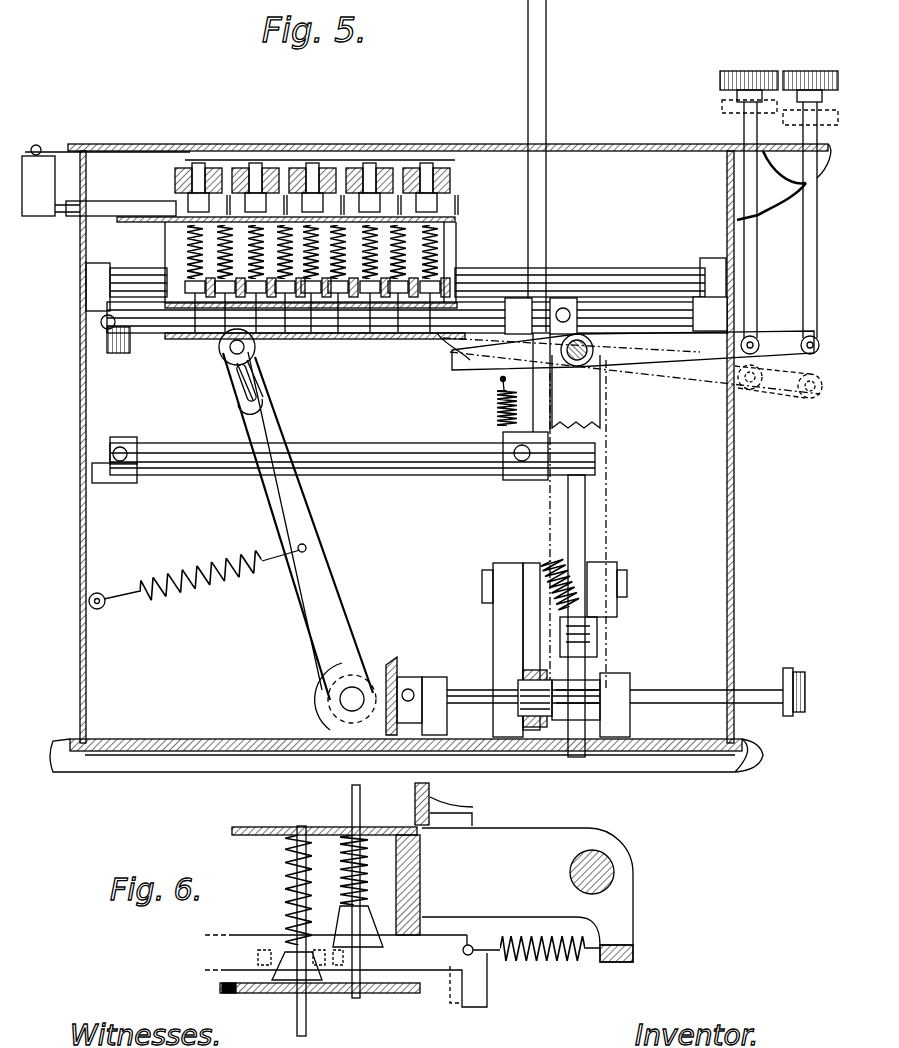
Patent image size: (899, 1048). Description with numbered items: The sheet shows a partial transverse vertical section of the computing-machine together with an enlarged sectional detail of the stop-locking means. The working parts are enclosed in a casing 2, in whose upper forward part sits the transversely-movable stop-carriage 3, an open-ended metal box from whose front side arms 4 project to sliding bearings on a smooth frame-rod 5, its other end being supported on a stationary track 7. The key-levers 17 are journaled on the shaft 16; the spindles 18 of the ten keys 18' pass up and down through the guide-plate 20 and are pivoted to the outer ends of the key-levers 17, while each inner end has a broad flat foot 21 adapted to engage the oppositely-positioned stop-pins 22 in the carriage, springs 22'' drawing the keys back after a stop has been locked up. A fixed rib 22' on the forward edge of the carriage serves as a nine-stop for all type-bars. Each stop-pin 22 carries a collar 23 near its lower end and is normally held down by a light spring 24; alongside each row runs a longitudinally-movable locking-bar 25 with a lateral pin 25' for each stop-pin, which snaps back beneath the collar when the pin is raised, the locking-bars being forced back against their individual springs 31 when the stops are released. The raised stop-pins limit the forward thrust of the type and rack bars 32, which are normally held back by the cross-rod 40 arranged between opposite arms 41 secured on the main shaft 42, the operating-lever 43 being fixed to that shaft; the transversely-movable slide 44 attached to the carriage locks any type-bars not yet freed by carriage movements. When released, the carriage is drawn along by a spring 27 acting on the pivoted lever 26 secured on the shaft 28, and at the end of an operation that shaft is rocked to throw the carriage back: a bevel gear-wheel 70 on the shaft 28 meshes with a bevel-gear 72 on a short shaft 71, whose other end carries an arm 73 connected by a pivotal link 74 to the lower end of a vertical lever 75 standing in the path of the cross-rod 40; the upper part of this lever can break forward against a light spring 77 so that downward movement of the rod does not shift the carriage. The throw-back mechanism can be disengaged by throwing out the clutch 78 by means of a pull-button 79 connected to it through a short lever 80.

In FIG. 5, the casing 2 is at (590, 145).
In FIG. 5, the stop-carriage 3 is at (432, 215).
In FIG. 6, the stop-carriage 3 is at (279, 834).
In FIG. 6, the arms 4 is at (542, 864).
In FIG. 6, the frame-rod 5 is at (618, 872).
In FIG. 5, the stationary track 7 is at (638, 269).
In FIG. 5, the shaft 16 is at (593, 351).
In FIG. 5, the key-levers 17 is at (657, 362).
In FIG. 5, the spindles 18 is at (757, 227).
In FIG. 5, the keys 18' is at (757, 86).
In FIG. 5, the guide-plate 20 is at (771, 185).
In FIG. 5, the foot 21 is at (440, 335).
In FIG. 5, the stop-pins 22 is at (396, 287).
In FIG. 6, the stop-pins 22 is at (344, 916).
In FIG. 6, the fixed rib 22' is at (456, 859).
In FIG. 5, the springs 22'' is at (478, 402).
In FIG. 6, the collar 23 is at (353, 923).
In FIG. 5, the light springs 24 is at (200, 275).
In FIG. 6, the light springs 24 is at (377, 834).
In FIG. 6, the locking-bar 25 is at (346, 971).
In FIG. 6, the lateral pin 25' is at (287, 944).
In FIG. 5, the pivoted lever 26 is at (330, 589).
In FIG. 5, the spring 27 is at (192, 572).
In FIG. 5, the shaft 28 is at (344, 698).
In FIG. 6, the springs 31 is at (540, 960).
In FIG. 5, the type and rack bars 32 is at (228, 166).
In FIG. 5, the cross-rod 40 is at (371, 466).
In FIG. 5, the arms 41 is at (119, 485).
In FIG. 5, the main shaft 42 is at (176, 340).
In FIG. 5, the operating-lever 43 is at (545, 211).
In FIG. 5, the slide 44 is at (120, 212).
In FIG. 5, the bevel gear-wheel 70 is at (336, 684).
In FIG. 5, the short shaft 71 is at (460, 690).
In FIG. 5, the bevel-gear 72 is at (392, 660).
In FIG. 5, the arm 73 is at (581, 713).
In FIG. 5, the pivotal link 74 is at (590, 633).
In FIG. 5, the vertical lever 75 is at (590, 513).
In FIG. 5, the light spring 77 is at (542, 572).
In FIG. 5, the clutch 78 is at (516, 706).
In FIG. 5, the pull-button 79 is at (770, 689).
In FIG. 5, the short lever 80 is at (545, 753).